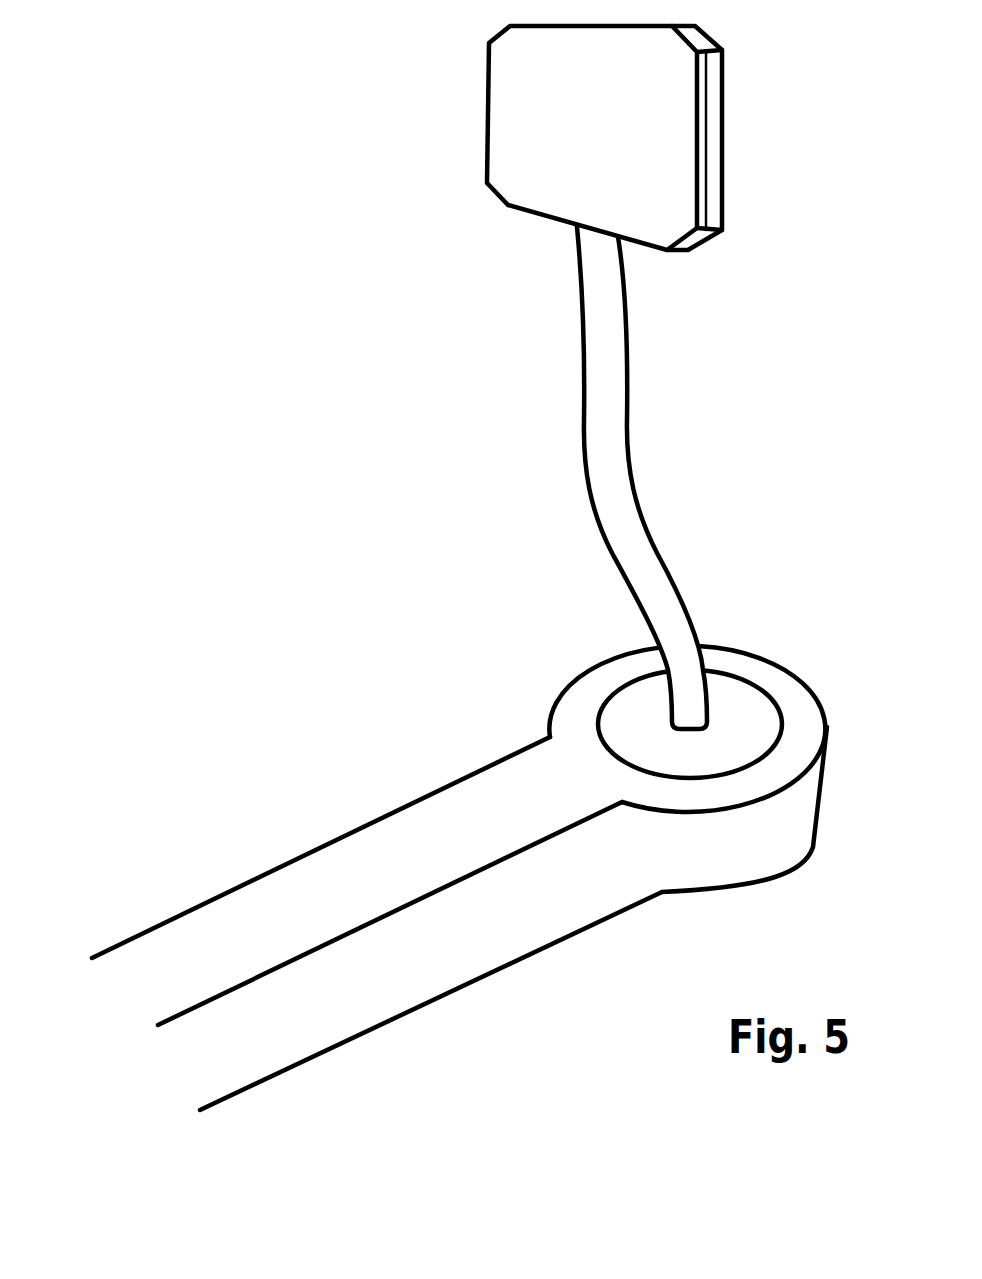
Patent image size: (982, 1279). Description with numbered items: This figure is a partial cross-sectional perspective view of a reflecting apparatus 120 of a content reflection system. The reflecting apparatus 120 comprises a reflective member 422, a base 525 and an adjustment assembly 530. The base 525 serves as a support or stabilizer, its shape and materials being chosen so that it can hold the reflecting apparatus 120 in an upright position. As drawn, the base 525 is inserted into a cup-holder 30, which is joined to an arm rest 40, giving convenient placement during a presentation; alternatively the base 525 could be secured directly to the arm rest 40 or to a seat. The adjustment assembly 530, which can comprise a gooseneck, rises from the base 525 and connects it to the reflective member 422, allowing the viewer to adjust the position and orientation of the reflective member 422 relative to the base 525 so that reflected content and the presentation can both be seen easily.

The reflecting apparatus 120 is at (190, 120).
The reflective member 422 is at (500, 126).
The adjustment assembly 530 is at (610, 362).
The cup-holder 30 is at (605, 687).
The base 525 is at (743, 708).
The arm rest 40 is at (405, 848).